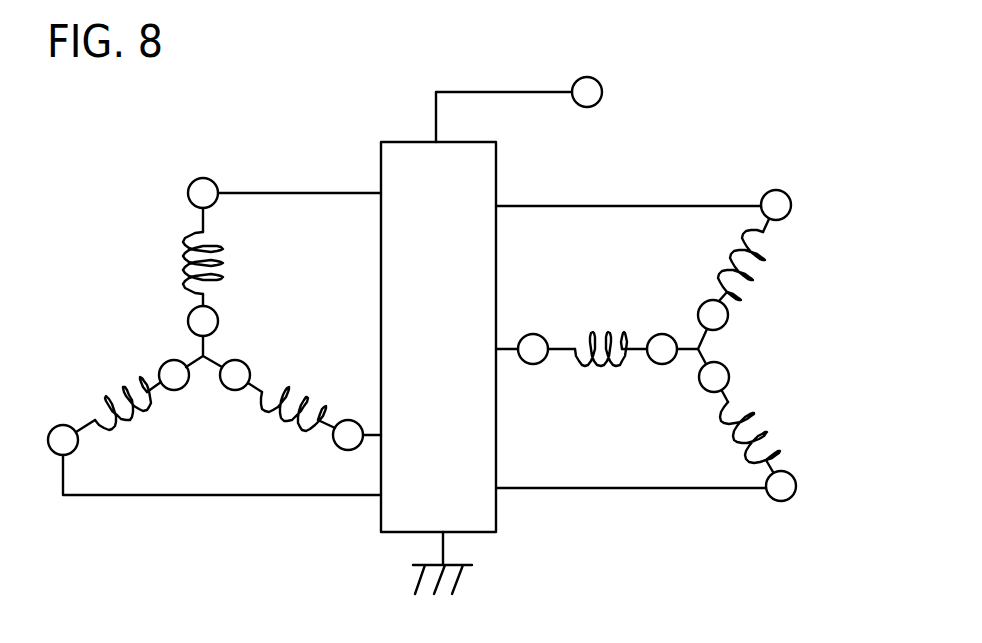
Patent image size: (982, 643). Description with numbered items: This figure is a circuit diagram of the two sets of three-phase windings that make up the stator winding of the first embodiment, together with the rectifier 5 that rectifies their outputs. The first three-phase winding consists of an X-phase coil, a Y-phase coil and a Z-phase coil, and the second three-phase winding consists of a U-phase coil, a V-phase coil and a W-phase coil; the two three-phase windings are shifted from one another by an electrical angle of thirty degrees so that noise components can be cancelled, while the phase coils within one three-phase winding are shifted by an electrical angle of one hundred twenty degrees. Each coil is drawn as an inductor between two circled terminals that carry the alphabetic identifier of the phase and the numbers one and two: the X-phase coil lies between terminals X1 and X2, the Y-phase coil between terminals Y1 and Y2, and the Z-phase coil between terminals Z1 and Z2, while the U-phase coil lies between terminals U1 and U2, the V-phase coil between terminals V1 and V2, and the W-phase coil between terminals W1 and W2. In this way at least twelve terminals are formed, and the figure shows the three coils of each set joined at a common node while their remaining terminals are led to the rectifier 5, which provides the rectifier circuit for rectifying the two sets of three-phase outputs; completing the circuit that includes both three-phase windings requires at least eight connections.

The rectifier 5 is at (485, 168).
The X-phase coil terminal X1 is at (212, 315).
The X-phase coil terminal X2 is at (208, 187).
The Y-phase coil terminal Y1 is at (167, 365).
The Y-phase coil terminal Y2 is at (60, 430).
The Z-phase coil terminal Z1 is at (232, 390).
The Z-phase coil terminal Z2 is at (337, 448).
The U-phase coil terminal U1 is at (722, 317).
The U-phase coil terminal U2 is at (783, 210).
The V-phase coil terminal V1 is at (653, 363).
The V-phase coil terminal V2 is at (533, 365).
The W-phase coil terminal W1 is at (723, 373).
The W-phase coil terminal W2 is at (787, 480).